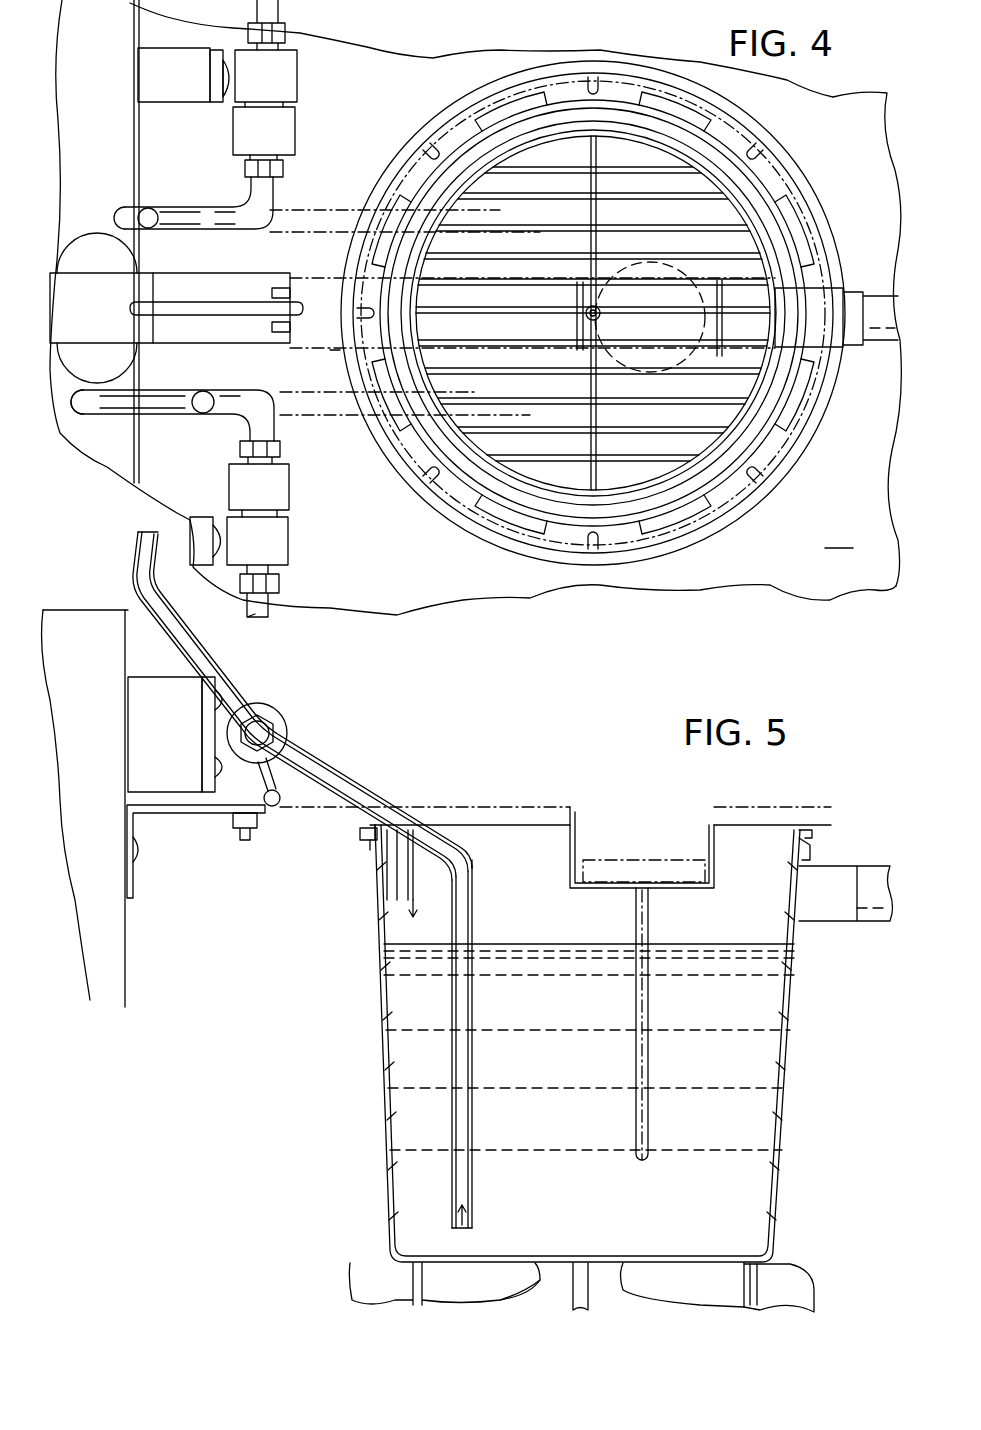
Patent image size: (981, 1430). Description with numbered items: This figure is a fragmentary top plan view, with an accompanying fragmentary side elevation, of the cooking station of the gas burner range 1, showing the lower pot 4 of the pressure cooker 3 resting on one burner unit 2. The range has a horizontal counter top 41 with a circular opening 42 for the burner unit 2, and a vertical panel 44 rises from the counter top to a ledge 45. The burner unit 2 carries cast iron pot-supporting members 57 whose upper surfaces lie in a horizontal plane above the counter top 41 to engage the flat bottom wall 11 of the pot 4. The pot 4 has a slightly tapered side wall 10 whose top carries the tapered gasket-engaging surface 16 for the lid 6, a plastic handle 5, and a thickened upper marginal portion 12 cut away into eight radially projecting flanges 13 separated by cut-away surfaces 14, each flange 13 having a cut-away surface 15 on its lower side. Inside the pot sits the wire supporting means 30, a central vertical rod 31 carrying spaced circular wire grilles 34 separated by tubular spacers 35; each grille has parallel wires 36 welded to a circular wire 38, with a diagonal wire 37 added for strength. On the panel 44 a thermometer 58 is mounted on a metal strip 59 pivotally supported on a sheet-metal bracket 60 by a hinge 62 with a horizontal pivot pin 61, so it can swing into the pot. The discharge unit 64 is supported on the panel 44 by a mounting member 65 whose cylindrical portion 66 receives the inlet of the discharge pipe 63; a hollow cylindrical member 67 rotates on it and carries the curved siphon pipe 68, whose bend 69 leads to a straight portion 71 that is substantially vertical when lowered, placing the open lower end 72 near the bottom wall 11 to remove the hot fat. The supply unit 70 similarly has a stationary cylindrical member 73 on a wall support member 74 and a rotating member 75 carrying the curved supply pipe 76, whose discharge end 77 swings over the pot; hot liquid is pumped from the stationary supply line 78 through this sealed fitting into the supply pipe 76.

In FIG. 4, the gas burner range 1 is at (595, 337).
In FIG. 4, the burner unit 2 is at (762, 463).
In FIG. 5, the burner unit 2 is at (790, 1264).
In FIG. 4, the pressure cooker 3 is at (618, 312).
In FIG. 5, the pressure cooker 3 is at (572, 1043).
In FIG. 4, the pot 4 is at (618, 312).
In FIG. 5, the pot 4 is at (572, 1043).
In FIG. 4, the plastic handle 5 is at (886, 290).
In FIG. 5, the plastic handle 5 is at (882, 866).
In FIG. 4, the lid 6 is at (748, 493).
In FIG. 5, the side wall portion 10 is at (380, 1045).
In FIG. 5, the bottom wall portion 11 is at (515, 1283).
In FIG. 4, the upper marginal portion 12 is at (762, 456).
In FIG. 5, the upper marginal portion 12 is at (382, 842).
In FIG. 4, the marginal flange 13 is at (490, 100).
In FIG. 5, the marginal flange 13 is at (360, 832).
In FIG. 4, the cut-away surface 14 is at (356, 320).
In FIG. 5, the cut-away surface 14 is at (812, 830).
In FIG. 5, the cut-away surface 15 is at (370, 845).
In FIG. 4, the gasket-engaging surface portion 16 is at (762, 420).
In FIG. 5, the gasket-engaging surface portion 16 is at (425, 820).
In FIG. 4, the wire supporting means 30 is at (716, 170).
In FIG. 4, the central vertical rod 31 is at (600, 316).
In FIG. 4, the wire grille 34 is at (762, 392).
In FIG. 4, the tubular metal spacer 35 is at (586, 314).
In FIG. 4, the parallel wire 36 is at (524, 218).
In FIG. 4, the diagonal wire 37 is at (604, 210).
In FIG. 4, the circular wire 38 is at (795, 245).
In FIG. 4, the counter top 41 is at (839, 537).
In FIG. 4, the circular opening 42 is at (571, 331).
In FIG. 4, the vertical panel 44 is at (140, 145).
In FIG. 5, the vertical panel 44 is at (128, 965).
In FIG. 4, the ledge 45 is at (80, 143).
In FIG. 5, the ledge 45 is at (68, 610).
In FIG. 4, the pot-supporting member 57 is at (598, 72).
In FIG. 5, the pot-supporting member 57 is at (370, 1263).
In FIG. 4, the thermometer 58 is at (210, 345).
In FIG. 5, the thermometer 58 is at (650, 1088).
In FIG. 4, the metal strip 59 is at (338, 346).
In FIG. 5, the metal strip 59 is at (128, 640).
In FIG. 5, the sheet-metal bracket 60 is at (180, 813).
In FIG. 5, the horizontal pivot pin 61 is at (290, 790).
In FIG. 4, the hinge 62 is at (288, 288).
In FIG. 5, the hinge 62 is at (275, 806).
In FIG. 4, the discharge pipe 63 is at (262, 614).
In FIG. 5, the discharge pipe 63 is at (272, 733).
In FIG. 4, the discharge unit 64 is at (277, 535).
In FIG. 5, the discharge unit 64 is at (153, 734).
In FIG. 4, the mounting member 65 is at (192, 518).
In FIG. 5, the mounting member 65 is at (130, 720).
In FIG. 4, the cylindrical portion 66 is at (290, 525).
In FIG. 5, the cylindrical portion 66 is at (278, 712).
In FIG. 4, the hollow cylindrical member 67 is at (290, 484).
In FIG. 4, the siphon pipe 68 is at (312, 418).
In FIG. 5, the siphon pipe 68 is at (360, 790).
In FIG. 4, the bend 69 is at (82, 402).
In FIG. 5, the bend 69 is at (475, 870).
In FIG. 4, the supply unit 70 is at (239, 88).
In FIG. 4, the straight portion 71 is at (122, 417).
In FIG. 5, the straight portion 71 is at (474, 1158).
In FIG. 4, the open lower end 72 is at (203, 414).
In FIG. 5, the open lower end 72 is at (470, 1232).
In FIG. 4, the stationary cylindrical member 73 is at (298, 92).
In FIG. 4, the wall support member 74 is at (148, 82).
In FIG. 4, the rotating cylindrical member 75 is at (298, 138).
In FIG. 4, the supply pipe 76 is at (203, 218).
In FIG. 5, the supply pipe 76 is at (180, 655).
In FIG. 4, the discharge end 77 is at (148, 208).
In FIG. 5, the discharge end 77 is at (140, 540).
In FIG. 4, the stationary supply line 78 is at (280, 12).